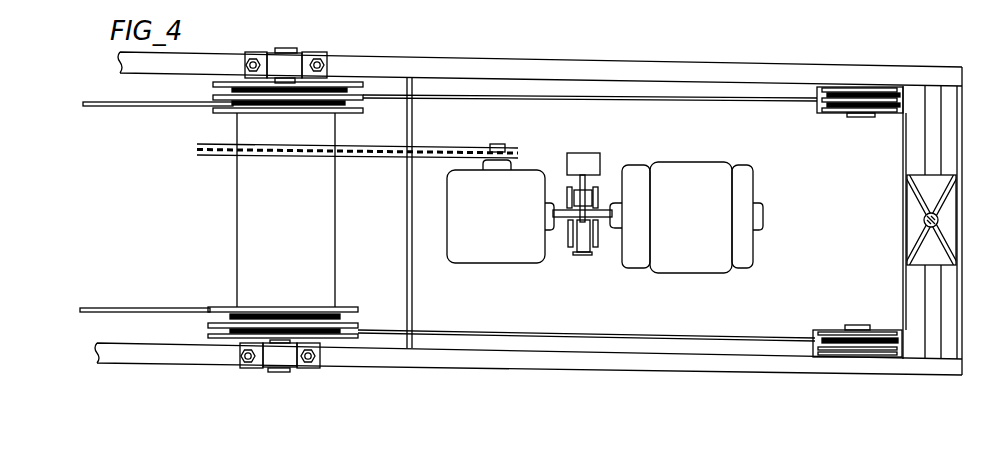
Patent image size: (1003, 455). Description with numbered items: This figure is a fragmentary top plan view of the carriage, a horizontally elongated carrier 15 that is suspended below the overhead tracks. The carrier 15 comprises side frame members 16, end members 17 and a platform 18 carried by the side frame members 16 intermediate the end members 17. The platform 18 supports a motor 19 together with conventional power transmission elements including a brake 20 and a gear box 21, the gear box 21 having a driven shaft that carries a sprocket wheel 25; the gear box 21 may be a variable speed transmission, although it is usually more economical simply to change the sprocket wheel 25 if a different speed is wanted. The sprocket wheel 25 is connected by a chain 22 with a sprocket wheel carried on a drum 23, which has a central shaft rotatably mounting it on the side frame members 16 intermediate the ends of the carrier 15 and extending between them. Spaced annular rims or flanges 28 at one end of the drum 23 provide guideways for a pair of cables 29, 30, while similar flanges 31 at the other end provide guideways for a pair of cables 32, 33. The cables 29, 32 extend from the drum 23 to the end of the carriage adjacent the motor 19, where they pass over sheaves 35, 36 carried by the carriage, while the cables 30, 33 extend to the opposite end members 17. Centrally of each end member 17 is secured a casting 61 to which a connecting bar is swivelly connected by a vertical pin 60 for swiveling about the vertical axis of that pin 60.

The carrier 15 is at (720, 58).
The side frame members 16 is at (598, 75).
The end members 17 is at (948, 140).
The platform 18 is at (773, 285).
The motor 19 is at (710, 175).
The brake 20 is at (607, 153).
The gear box 21 is at (468, 272).
The chain 22 is at (393, 160).
The drum 23 is at (320, 241).
The sprocket wheel 25 is at (507, 150).
The annular rims or flanges 28 is at (363, 110).
The cable 29 is at (488, 96).
The cable 30 is at (143, 108).
The annular rims or flanges 31 is at (360, 332).
The cable 32 is at (513, 332).
The cable 33 is at (140, 308).
The sheave 35 is at (882, 113).
The sheave 36 is at (815, 334).
The vertical pin 60 is at (938, 217).
The casting 61 is at (950, 235).